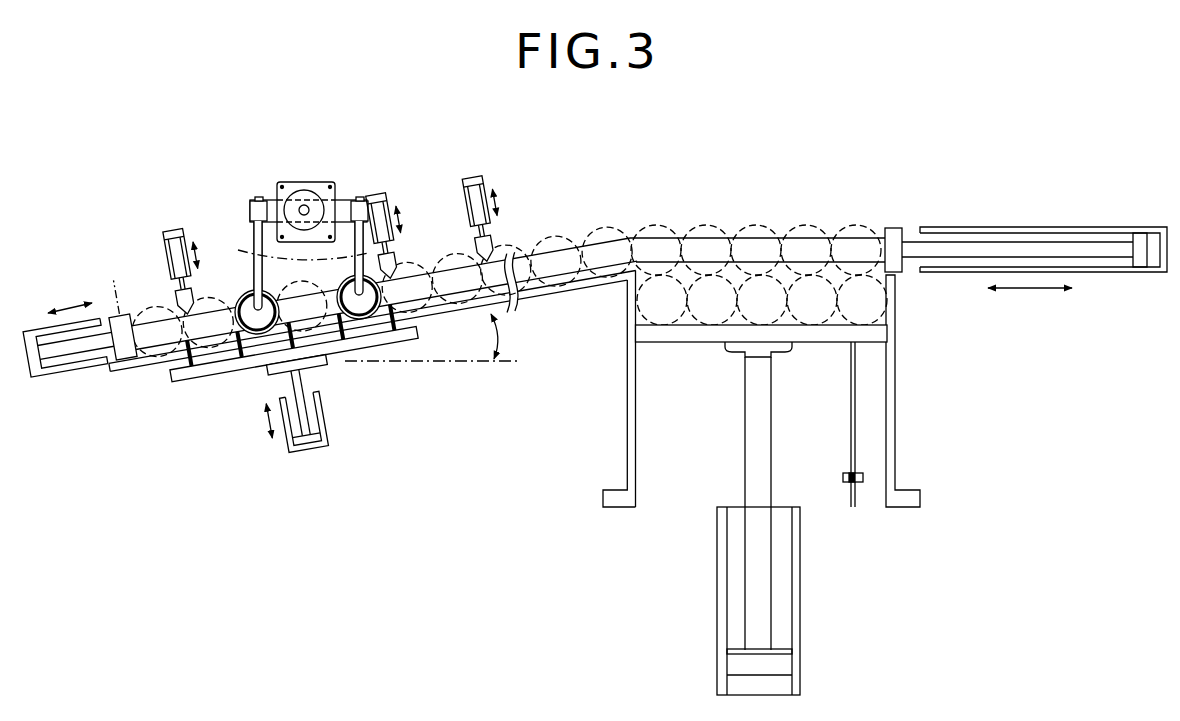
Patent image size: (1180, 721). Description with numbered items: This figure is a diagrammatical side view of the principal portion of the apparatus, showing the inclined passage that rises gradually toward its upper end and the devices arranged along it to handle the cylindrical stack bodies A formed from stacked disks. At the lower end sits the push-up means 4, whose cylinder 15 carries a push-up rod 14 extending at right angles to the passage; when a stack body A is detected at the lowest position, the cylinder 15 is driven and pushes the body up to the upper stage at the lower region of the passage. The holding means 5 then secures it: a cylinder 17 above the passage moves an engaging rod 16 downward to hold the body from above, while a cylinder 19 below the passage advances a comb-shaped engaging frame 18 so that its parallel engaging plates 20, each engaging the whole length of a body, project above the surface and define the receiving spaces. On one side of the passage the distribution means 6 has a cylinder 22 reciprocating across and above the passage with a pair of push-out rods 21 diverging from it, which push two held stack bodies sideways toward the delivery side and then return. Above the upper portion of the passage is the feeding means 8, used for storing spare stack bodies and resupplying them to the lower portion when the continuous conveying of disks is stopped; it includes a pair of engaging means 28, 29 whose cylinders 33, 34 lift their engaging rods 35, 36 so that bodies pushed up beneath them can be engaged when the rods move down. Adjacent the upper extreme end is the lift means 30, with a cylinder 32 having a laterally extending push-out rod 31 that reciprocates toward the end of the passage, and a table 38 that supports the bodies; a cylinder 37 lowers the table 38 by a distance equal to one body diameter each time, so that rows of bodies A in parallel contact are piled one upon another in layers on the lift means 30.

The push-up means 4 is at (88, 375).
The holding means 5 is at (170, 229).
The distribution means 6 is at (267, 194).
The feeding means 8 is at (839, 222).
The push-up rod 14 is at (122, 308).
The cylinder 15 is at (54, 374).
The engaging rod 16 is at (180, 305).
The cylinder 17 is at (182, 232).
The engaging frame 18 is at (237, 369).
The cylinder 19 is at (277, 447).
The engaging plates 20 is at (222, 369).
The push-out rods 21 is at (254, 262).
The cylinder 22 is at (318, 183).
The engaging means 28 is at (396, 209).
The engaging means 29 is at (487, 186).
The lift means 30 is at (686, 346).
The push-out rod 31 is at (894, 228).
The cylinder 32 is at (1034, 227).
The cylinder 33 is at (375, 196).
The cylinder 34 is at (472, 176).
The engaging rod 35 is at (396, 262).
The engaging rod 36 is at (494, 246).
The cylinder 37 is at (718, 594).
The table 38 is at (814, 343).
The cylindrical stack body A is at (752, 233).